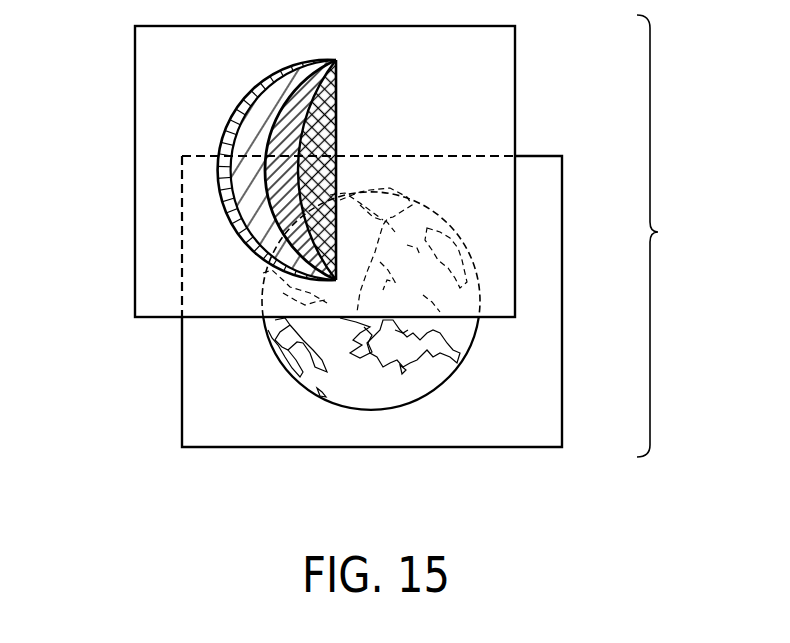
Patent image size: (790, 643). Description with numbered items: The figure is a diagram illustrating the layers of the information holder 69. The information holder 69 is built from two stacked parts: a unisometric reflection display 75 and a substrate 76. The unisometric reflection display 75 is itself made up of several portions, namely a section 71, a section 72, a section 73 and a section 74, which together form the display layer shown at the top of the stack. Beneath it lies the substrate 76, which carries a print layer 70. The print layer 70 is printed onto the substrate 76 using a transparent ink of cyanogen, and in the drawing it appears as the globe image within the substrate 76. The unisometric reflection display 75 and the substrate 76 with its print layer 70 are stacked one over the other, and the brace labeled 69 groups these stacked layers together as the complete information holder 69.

The information holder 69 is at (666, 236).
The print layer 70 is at (433, 398).
The section 71 is at (329, 80).
The section 72 is at (325, 116).
The section 73 is at (278, 91).
The section 74 is at (241, 128).
The unisometric reflection display 75 is at (134, 158).
The substrate 76 is at (534, 374).